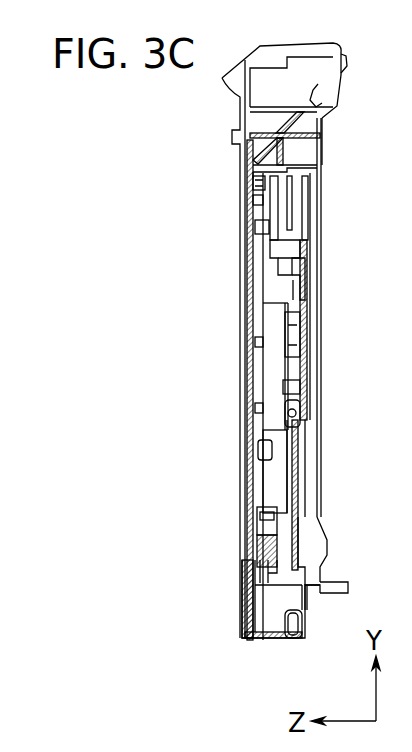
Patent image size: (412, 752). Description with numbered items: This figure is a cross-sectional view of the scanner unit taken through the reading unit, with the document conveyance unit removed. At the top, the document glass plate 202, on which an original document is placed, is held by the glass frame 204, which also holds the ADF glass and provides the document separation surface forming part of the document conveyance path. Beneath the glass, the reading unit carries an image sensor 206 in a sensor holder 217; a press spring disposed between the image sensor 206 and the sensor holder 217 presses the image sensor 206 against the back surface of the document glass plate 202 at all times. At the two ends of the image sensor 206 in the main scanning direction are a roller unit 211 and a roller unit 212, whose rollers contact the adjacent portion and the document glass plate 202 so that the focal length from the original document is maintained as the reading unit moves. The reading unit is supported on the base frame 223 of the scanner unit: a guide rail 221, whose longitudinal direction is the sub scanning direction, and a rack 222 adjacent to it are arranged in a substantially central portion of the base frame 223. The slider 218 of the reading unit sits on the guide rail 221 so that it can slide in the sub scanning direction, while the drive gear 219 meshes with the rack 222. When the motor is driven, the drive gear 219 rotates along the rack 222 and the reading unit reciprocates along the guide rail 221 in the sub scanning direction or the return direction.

The document glass plate 202 is at (250, 310).
The glass frame 204 is at (247, 613).
The image sensor 206 is at (257, 238).
The roller unit 211 is at (250, 182).
The roller unit 212 is at (263, 567).
The sensor holder 217 is at (275, 486).
The slider 218 is at (292, 397).
The drive gear 219 is at (306, 358).
The guide rail 221 is at (306, 422).
The rack 222 is at (288, 387).
The base frame 223 is at (312, 242).